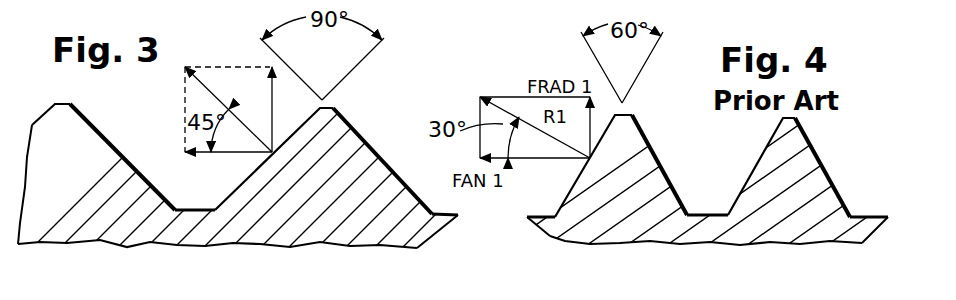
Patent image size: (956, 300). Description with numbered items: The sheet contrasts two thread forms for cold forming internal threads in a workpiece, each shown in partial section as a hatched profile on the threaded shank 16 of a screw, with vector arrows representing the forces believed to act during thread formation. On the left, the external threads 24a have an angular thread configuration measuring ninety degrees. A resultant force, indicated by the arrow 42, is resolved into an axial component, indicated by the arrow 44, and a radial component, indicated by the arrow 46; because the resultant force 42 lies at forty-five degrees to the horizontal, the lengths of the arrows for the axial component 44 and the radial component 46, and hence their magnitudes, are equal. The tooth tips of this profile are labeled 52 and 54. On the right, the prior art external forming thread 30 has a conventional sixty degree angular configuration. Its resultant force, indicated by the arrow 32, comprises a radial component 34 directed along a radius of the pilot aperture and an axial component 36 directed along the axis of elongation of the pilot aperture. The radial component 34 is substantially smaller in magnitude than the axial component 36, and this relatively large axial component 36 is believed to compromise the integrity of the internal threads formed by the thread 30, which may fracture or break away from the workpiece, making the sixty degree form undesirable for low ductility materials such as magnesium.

In FIG. 3, the external threads 24a is at (310, 152).
In FIG. 3, the threaded shank 16 is at (433, 227).
In FIG. 4, the threaded shank 16 is at (543, 223).
In FIG. 3, the resultant force 42 is at (207, 85).
In FIG. 3, the radial component 46 is at (270, 93).
In FIG. 3, the axial component 44 is at (232, 156).
In FIG. 3, the tooth tip 52 is at (147, 296).
In FIG. 3, the tooth tip 54 is at (231, 296).
In FIG. 4, the external forming thread 30 is at (773, 168).
In FIG. 4, the resultant force 32 is at (506, 97).
In FIG. 4, the radial component 34 is at (596, 125).
In FIG. 4, the axial component 36 is at (555, 162).